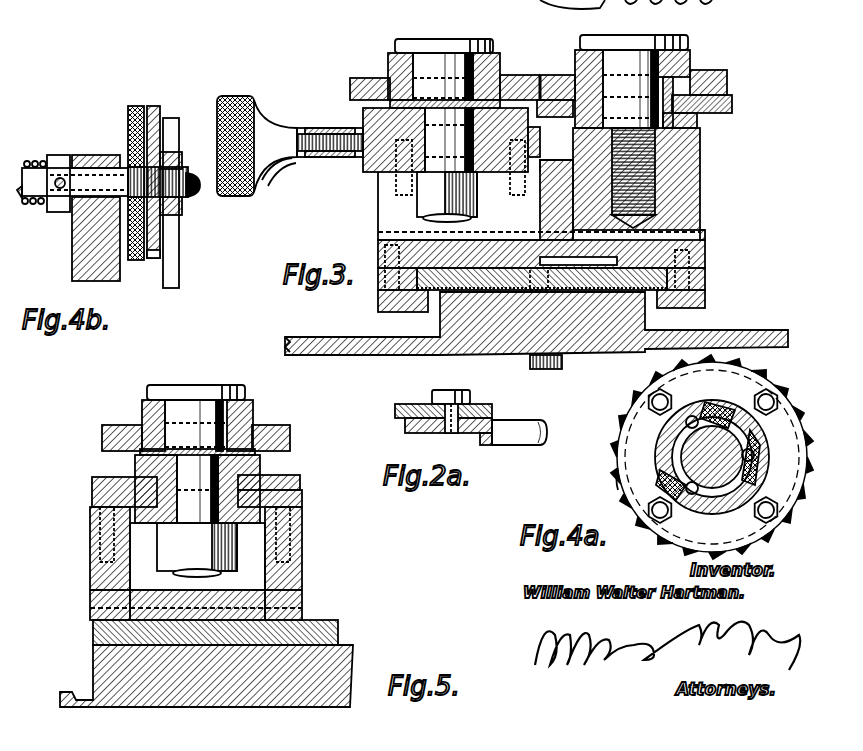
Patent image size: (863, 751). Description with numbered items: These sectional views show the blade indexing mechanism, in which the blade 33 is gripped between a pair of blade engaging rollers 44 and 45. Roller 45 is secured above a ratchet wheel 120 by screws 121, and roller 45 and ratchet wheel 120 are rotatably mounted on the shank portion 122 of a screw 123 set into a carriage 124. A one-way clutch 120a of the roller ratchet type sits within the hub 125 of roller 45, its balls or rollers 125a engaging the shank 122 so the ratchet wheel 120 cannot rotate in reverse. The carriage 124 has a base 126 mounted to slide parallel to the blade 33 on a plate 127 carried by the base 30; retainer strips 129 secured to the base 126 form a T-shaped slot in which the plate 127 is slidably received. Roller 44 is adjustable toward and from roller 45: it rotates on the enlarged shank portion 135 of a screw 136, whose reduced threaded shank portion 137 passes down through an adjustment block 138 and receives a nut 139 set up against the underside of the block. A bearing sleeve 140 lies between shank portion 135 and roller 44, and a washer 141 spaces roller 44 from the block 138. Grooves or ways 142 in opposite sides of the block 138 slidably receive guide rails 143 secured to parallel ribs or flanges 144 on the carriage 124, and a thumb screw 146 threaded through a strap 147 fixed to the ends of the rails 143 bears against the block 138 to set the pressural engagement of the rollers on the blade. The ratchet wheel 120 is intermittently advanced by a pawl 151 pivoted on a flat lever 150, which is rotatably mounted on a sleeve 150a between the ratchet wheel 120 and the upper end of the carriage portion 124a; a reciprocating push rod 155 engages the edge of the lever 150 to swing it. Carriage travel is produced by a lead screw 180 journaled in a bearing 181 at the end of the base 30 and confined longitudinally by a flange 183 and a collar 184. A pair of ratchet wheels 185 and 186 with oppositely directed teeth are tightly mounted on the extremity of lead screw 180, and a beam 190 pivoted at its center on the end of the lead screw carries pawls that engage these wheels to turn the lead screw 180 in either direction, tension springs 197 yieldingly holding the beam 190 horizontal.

In FIG. 3, the base 30 is at (304, 341).
In FIG. 5, the base 30 is at (70, 692).
In FIG. 3, the blade 33 is at (560, 80).
In FIG. 3, the blade engaging roller 44 is at (515, 80).
In FIG. 5, the blade engaging roller 44 is at (118, 428).
In FIG. 3, the blade engaging roller 45 is at (565, 75).
In FIG. 4A, the blade engaging roller 45 is at (620, 478).
In FIG. 3, the ratchet wheel 120 is at (732, 104).
In FIG. 4A, the ratchet wheel 120 is at (630, 489).
In FIG. 4A, the one-way clutch 120a is at (750, 444).
In FIG. 3, the screws 121 is at (706, 72).
In FIG. 4A, the screws 121 is at (758, 395).
In FIG. 3, the shank portion 122 is at (617, 68).
In FIG. 4A, the shank portion 122 is at (692, 455).
In FIG. 3, the screw 123 is at (662, 38).
In FIG. 3, the carriage 124 is at (700, 186).
In FIG. 5, the carriage 124 is at (302, 584).
In FIG. 3, the carriage portion 124a is at (665, 134).
In FIG. 3, the hub 125 is at (675, 78).
In FIG. 4A, the hub 125 is at (665, 440).
In FIG. 3, the balls or rollers 125a is at (688, 52).
In FIG. 4A, the balls or rollers 125a is at (686, 422).
In FIG. 3, the base 126 is at (378, 252).
In FIG. 5, the base 126 is at (130, 598).
In FIG. 3, the plate 127 is at (442, 293).
In FIG. 5, the plate 127 is at (338, 620).
In FIG. 3, the retainer strips 129 is at (378, 301).
In FIG. 3, the enlarged shank portion 135 is at (390, 63).
In FIG. 5, the enlarged shank portion 135 is at (252, 408).
In FIG. 3, the screw 136 is at (415, 39).
In FIG. 5, the screw 136 is at (180, 385).
In FIG. 3, the reduced screwthreaded shank portion 137 is at (432, 122).
In FIG. 5, the reduced screwthreaded shank portion 137 is at (258, 465).
In FIG. 3, the adjustment block 138 is at (376, 172).
In FIG. 5, the adjustment block 138 is at (262, 470).
In FIG. 3, the nut 139 is at (420, 198).
In FIG. 5, the nut 139 is at (160, 545).
In FIG. 3, the bearing sleeve 140 is at (388, 77).
In FIG. 5, the bearing sleeve 140 is at (142, 406).
In FIG. 3, the washer 141 is at (390, 105).
In FIG. 5, the washer 141 is at (254, 452).
In FIG. 5, the grooves or ways 142 is at (136, 479).
In FIG. 5, the guide rails 143 is at (90, 481).
In FIG. 3, the ribs or flanges 144 is at (475, 190).
In FIG. 5, the ribs or flanges 144 is at (105, 565).
In FIG. 3, the thumb screw 146 is at (238, 96).
In FIG. 3, the strap 147 is at (330, 158).
In FIG. 3, the flat lever 150 is at (697, 119).
In FIG. 3, the sleeve 150a is at (684, 122).
In FIG. 2A, the pawl 151 is at (400, 404).
In FIG. 2A, the push rod 155 is at (513, 420).
In FIG. 4B, the lead screw 180 is at (18, 170).
In FIG. 4B, the bearing 181 is at (104, 155).
In FIG. 4B, the flange 183 is at (114, 155).
In FIG. 4B, the collar 184 is at (56, 154).
In FIG. 4B, the ratchet wheel 185 is at (136, 108).
In FIG. 4B, the ratchet wheel 186 is at (150, 108).
In FIG. 4B, the beam 190 is at (178, 244).
In FIG. 4B, the tension springs 197 is at (33, 206).